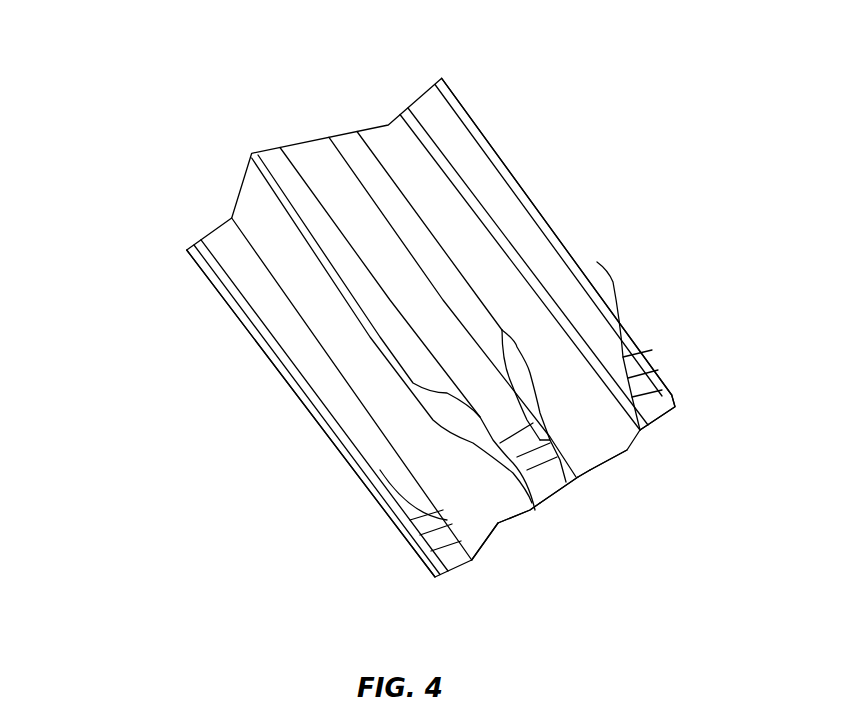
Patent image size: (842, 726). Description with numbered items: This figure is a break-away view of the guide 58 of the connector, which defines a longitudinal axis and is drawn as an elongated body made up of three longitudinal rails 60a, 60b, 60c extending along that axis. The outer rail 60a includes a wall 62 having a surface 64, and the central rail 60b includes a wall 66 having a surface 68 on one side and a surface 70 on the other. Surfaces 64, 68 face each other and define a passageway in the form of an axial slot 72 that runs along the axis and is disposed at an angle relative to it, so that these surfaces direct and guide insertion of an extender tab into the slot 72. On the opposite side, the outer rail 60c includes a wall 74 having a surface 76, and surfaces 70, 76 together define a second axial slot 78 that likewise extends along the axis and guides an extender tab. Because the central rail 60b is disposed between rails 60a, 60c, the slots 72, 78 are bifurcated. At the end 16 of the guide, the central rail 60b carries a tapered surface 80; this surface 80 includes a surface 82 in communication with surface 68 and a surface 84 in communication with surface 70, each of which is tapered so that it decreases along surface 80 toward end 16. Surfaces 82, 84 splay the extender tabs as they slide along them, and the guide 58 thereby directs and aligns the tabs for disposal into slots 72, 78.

The guide 58 is at (98, 136).
The longitudinal rail 60a is at (245, 310).
The longitudinal rail 60b is at (430, 150).
The longitudinal rail 60c is at (553, 268).
The wall 62 is at (320, 405).
The surface 64 is at (393, 472).
The wall 66 is at (370, 235).
The surface 68 is at (353, 267).
The surface 70 is at (435, 272).
The wall 74 is at (592, 278).
The surface 76 is at (583, 313).
The end 16 is at (672, 395).
The axial slot 78 is at (596, 427).
The tapered surface 80 is at (553, 483).
The surface 82 is at (518, 495).
The surface 84 is at (558, 438).
The axial slot 72 is at (493, 507).